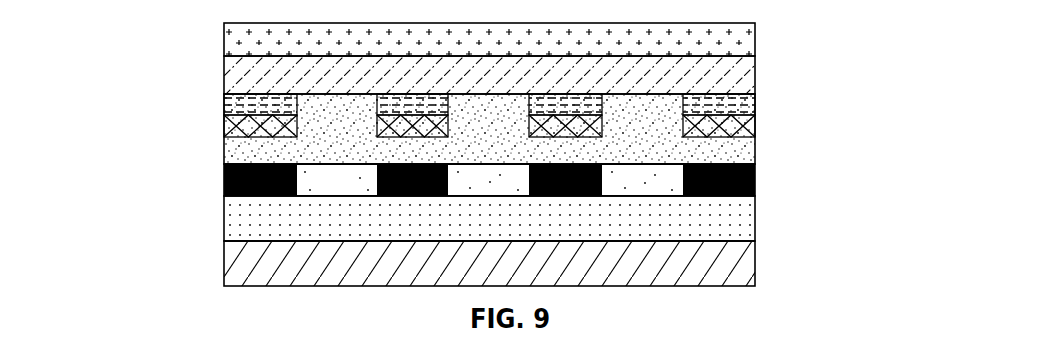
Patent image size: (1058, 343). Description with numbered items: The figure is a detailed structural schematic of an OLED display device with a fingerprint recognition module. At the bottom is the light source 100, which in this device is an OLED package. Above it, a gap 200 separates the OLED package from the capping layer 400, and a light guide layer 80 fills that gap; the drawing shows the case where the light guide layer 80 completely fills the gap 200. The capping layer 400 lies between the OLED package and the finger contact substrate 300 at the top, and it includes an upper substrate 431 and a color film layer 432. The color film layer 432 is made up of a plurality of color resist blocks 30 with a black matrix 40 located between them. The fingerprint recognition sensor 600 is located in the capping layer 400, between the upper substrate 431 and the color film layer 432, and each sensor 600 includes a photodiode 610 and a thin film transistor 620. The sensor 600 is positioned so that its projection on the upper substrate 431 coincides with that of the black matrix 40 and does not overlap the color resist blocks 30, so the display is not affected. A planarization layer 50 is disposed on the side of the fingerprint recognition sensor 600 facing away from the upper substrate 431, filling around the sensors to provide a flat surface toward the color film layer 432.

The light source 100 is at (755, 273).
The light guide layer 80 is at (748, 230).
The gap 200 is at (224, 218).
The black matrix 40 is at (224, 182).
The color resist blocks 30 is at (490, 180).
The planarization layer 50 is at (750, 145).
The fingerprint recognition sensor 600 is at (400, 121).
The photodiode 610 is at (225, 124).
The thin film transistor 620 is at (225, 100).
The capping layer 400 is at (592, 128).
The upper substrate 431 is at (742, 78).
The color film layer 432 is at (550, 182).
The finger contact substrate 300 is at (233, 41).